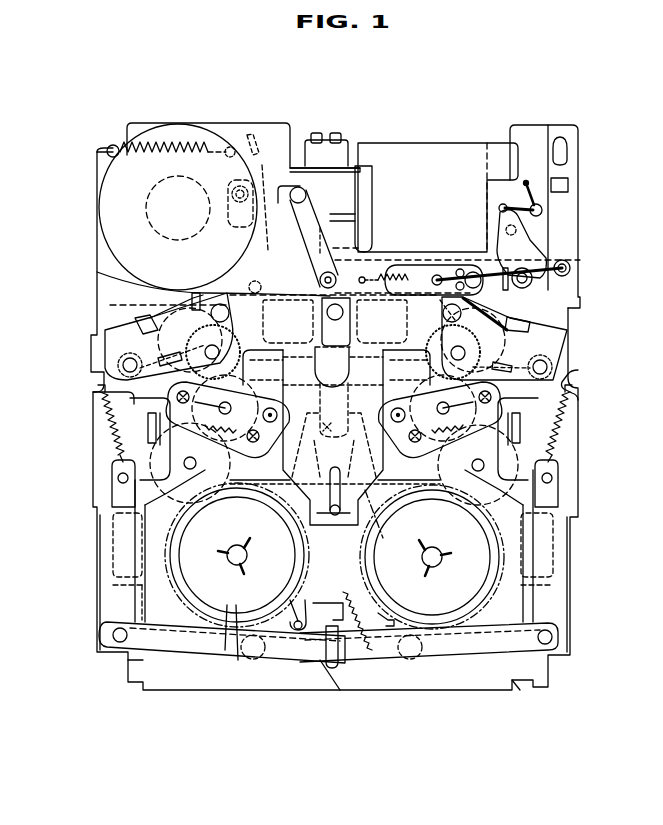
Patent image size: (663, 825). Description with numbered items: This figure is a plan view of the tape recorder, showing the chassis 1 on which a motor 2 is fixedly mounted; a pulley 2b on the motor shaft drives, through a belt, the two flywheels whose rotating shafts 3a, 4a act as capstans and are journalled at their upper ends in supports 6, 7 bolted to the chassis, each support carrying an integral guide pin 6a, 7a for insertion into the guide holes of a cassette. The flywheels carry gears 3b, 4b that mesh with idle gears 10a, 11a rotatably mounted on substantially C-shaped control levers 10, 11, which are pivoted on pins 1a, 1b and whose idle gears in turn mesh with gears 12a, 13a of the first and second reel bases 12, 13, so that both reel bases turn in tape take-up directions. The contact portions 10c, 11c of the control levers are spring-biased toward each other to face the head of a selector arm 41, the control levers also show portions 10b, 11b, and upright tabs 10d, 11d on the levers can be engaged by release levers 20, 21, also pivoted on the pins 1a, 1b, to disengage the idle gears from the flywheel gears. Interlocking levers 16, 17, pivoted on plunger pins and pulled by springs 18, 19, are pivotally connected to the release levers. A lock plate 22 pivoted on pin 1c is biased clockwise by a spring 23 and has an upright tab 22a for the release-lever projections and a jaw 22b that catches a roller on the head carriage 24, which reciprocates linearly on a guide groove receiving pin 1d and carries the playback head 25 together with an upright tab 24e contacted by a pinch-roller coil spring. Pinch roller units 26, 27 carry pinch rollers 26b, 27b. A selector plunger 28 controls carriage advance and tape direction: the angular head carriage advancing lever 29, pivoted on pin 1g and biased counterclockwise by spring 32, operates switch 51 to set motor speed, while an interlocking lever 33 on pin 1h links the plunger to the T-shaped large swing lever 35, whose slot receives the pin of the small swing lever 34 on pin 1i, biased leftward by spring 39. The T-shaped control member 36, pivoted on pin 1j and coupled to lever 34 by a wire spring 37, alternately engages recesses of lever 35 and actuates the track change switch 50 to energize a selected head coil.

The chassis 1 is at (527, 132).
The pin 1a is at (407, 662).
The pin 1b is at (262, 655).
The pin 1c is at (300, 640).
The pin 1d is at (330, 511).
The pin 1g is at (250, 285).
The pin 1h is at (334, 229).
The pin 1i is at (447, 285).
The pin 1j is at (548, 290).
The motor 2 is at (112, 229).
The pulley 2b is at (147, 203).
The rotating shaft 3a is at (540, 390).
The gear 3b is at (526, 412).
The rotating shaft 4a is at (100, 384).
The gear 4b is at (140, 440).
The support 6 is at (420, 488).
The guide pin 6a is at (385, 413).
The support 7 is at (237, 530).
The guide pin 7a is at (280, 413).
The control lever 10 is at (515, 545).
The idle gear 10a is at (551, 468).
The hole 10b is at (440, 655).
The contact portion 10c is at (376, 522).
The upright tab 10d is at (537, 685).
The control lever 11 is at (152, 607).
The idle gear 11a is at (118, 464).
The hole 11b is at (245, 660).
The contact portion 11c is at (248, 549).
The upright tab 11d is at (142, 675).
The first reel base 12 is at (447, 607).
The gear 12a is at (472, 607).
The second reel base 13 is at (226, 622).
The gear 13a is at (160, 555).
The interlocking lever 16 is at (552, 596).
The interlocking lever 17 is at (122, 593).
The spring 18 is at (558, 438).
The spring 19 is at (100, 420).
The release lever 20 is at (494, 648).
The release lever 21 is at (197, 650).
The lock plate 22 is at (286, 612).
The upright tab 22a is at (330, 675).
The jaw 22b is at (300, 562).
The spring 23 is at (372, 612).
The head carriage 24 is at (366, 560).
The upright tab 24e is at (127, 280).
The playback head 25 is at (330, 368).
The pinch roller unit 26 is at (563, 352).
The pinch roller 26b is at (440, 360).
The pinch roller unit 27 is at (108, 330).
The pinch roller 27b is at (150, 306).
The selector plunger 28 is at (402, 152).
The head carriage advancing lever 29 is at (233, 142).
The spring 32 is at (162, 148).
The interlocking lever 33 is at (333, 218).
The small swing lever 34 is at (413, 277).
The large swing lever 35 is at (565, 318).
The T-shaped control member 36 is at (520, 240).
The wire spring 37 is at (550, 262).
The spring 39 is at (388, 275).
The selector arm 41 is at (278, 492).
The track change switch 50 is at (568, 186).
The switch 51 is at (308, 146).